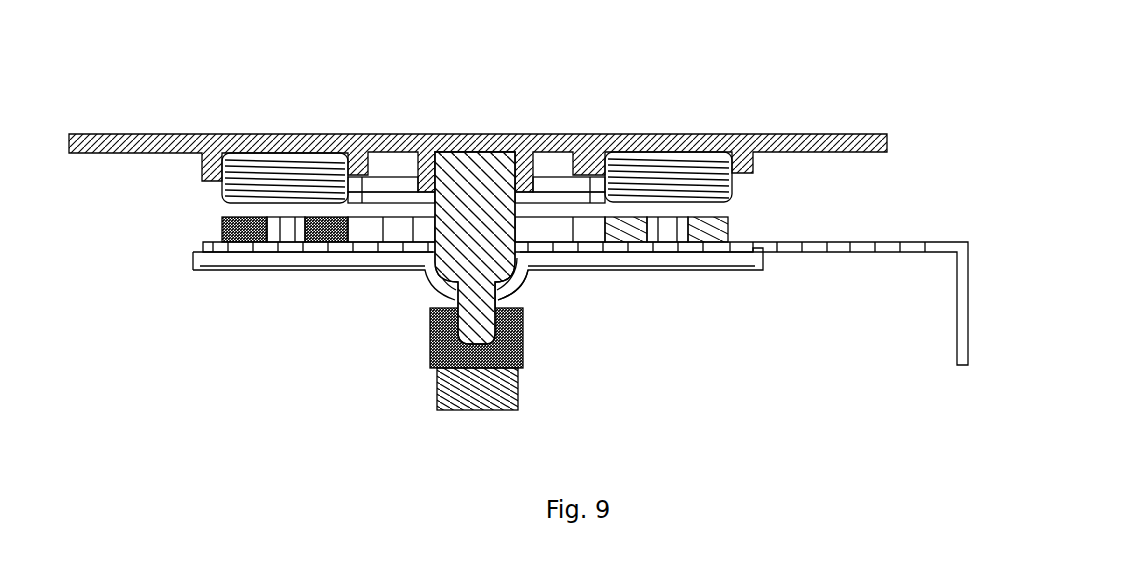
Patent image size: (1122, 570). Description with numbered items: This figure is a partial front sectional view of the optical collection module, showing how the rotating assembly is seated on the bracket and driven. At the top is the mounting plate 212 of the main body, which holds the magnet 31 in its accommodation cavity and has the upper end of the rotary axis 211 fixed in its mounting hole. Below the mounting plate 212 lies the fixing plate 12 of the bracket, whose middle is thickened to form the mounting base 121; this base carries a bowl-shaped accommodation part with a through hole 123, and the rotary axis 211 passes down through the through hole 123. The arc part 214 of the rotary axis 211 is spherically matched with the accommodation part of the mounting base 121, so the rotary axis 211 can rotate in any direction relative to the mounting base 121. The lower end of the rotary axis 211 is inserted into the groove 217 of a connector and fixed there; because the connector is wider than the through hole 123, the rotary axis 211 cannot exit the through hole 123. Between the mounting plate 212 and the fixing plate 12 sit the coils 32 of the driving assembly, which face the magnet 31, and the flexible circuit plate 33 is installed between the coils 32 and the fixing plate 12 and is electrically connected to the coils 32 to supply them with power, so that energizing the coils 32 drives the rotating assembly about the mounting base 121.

The fixing plate 12 is at (732, 258).
The mounting base 121 is at (520, 263).
The through hole 123 is at (517, 293).
The rotary axis 211 is at (477, 192).
The mounting plate 212 is at (818, 132).
The arc part 214 is at (447, 272).
The groove 217 is at (430, 327).
The magnet 31 is at (670, 175).
The coils 32 is at (238, 243).
The flexible circuit plate 33 is at (892, 243).